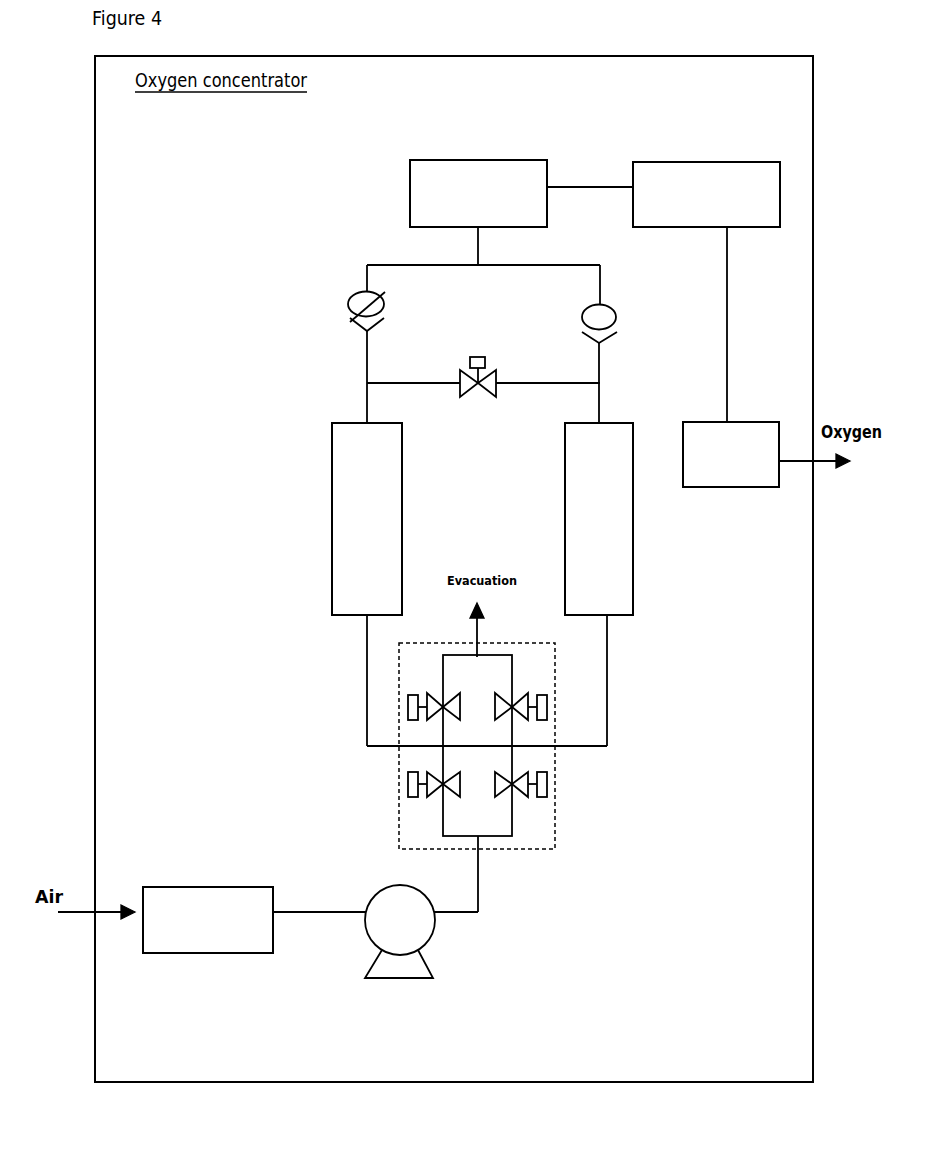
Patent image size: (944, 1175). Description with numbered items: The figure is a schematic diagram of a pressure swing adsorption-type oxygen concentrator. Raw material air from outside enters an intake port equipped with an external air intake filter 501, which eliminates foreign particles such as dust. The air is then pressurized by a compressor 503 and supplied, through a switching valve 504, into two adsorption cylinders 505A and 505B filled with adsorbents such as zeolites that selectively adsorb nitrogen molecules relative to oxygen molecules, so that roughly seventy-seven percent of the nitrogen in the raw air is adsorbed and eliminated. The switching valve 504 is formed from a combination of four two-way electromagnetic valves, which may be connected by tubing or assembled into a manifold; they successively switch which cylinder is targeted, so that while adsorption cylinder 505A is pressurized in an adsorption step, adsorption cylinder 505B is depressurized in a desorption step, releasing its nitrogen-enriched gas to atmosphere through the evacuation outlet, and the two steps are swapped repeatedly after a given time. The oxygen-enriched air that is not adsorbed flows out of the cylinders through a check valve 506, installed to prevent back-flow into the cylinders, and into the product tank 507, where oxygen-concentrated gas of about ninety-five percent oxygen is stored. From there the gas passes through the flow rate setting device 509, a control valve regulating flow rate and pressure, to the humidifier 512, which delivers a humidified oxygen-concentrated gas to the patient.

The external air intake filter 501 is at (208, 920).
The compressor 503 is at (481, 966).
The switching valve 504 is at (551, 776).
The adsorption cylinder 505A is at (367, 519).
The adsorption cylinder 505B is at (599, 519).
The check valve 506 is at (484, 322).
The product tank 507 is at (478, 193).
The flow rate setting device 509 is at (706, 194).
The humidifier 512 is at (731, 454).